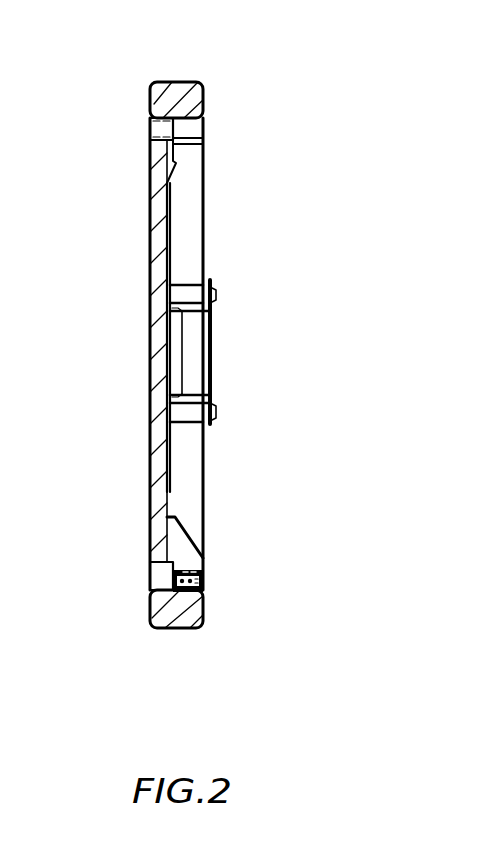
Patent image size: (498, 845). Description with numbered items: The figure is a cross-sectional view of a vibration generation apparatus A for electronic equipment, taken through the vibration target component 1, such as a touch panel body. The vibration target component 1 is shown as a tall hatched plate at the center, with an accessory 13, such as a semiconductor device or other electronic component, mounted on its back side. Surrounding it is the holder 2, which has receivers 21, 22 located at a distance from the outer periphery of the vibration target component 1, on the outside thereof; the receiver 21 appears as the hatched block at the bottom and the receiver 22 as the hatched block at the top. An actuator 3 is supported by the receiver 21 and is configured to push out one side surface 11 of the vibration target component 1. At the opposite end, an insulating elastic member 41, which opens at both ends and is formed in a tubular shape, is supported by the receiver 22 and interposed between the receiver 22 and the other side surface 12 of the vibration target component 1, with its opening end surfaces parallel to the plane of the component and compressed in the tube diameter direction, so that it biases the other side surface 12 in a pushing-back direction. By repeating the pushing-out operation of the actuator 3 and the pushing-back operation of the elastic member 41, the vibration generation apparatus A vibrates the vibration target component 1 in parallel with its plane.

The vibration target component 1 is at (156, 354).
The holder 2 is at (204, 170).
The actuator 3 is at (204, 583).
The one side surface 11 is at (204, 573).
The other side surface 12 is at (150, 128).
The accessory 13 is at (212, 359).
The receiver 21 is at (184, 628).
The receiver 22 is at (160, 88).
The insulating elastic member 41 is at (168, 131).
The vibration generation apparatus A is at (215, 256).